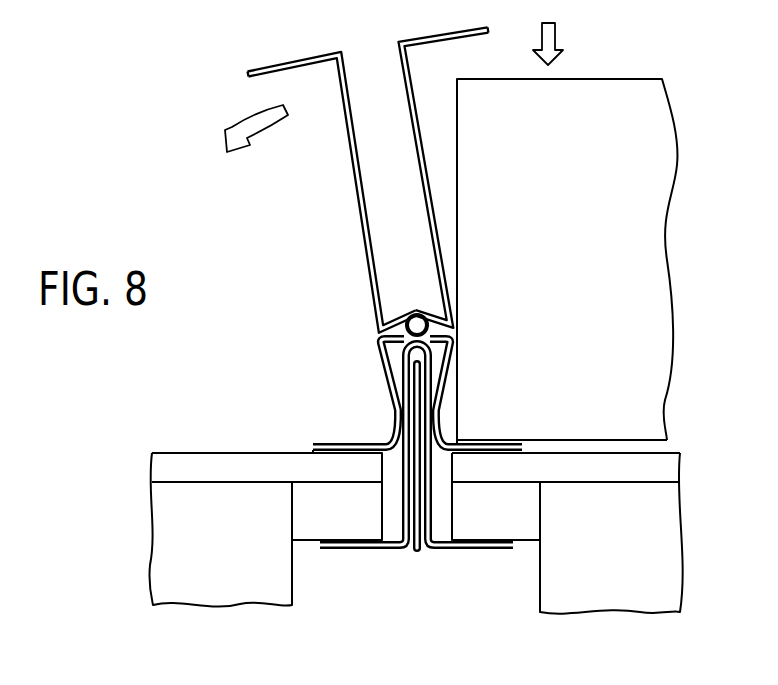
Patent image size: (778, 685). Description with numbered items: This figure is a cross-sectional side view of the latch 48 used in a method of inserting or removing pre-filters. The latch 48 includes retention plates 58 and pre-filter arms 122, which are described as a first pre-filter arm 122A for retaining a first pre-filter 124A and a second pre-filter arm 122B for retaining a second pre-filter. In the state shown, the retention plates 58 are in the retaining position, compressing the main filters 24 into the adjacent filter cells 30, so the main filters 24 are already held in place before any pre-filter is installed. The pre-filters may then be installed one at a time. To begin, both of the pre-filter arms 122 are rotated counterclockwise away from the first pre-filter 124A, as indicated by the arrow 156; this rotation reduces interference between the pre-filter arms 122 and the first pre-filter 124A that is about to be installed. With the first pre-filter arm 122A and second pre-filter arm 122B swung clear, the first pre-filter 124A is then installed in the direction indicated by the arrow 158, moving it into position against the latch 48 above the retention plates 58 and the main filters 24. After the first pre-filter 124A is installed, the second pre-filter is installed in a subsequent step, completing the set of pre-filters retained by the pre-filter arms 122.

The main filter 24 is at (138, 526).
The filter cell 30 is at (248, 623).
The latch 48 is at (319, 304).
The retention plate 58 is at (381, 372).
The pre-filter arm 122 is at (394, 550).
The first pre-filter arm 122A is at (408, 96).
The second pre-filter arm 122B is at (352, 166).
The first pre-filter 124A is at (609, 79).
The arrow 156 is at (260, 118).
The arrow 158 is at (551, 38).